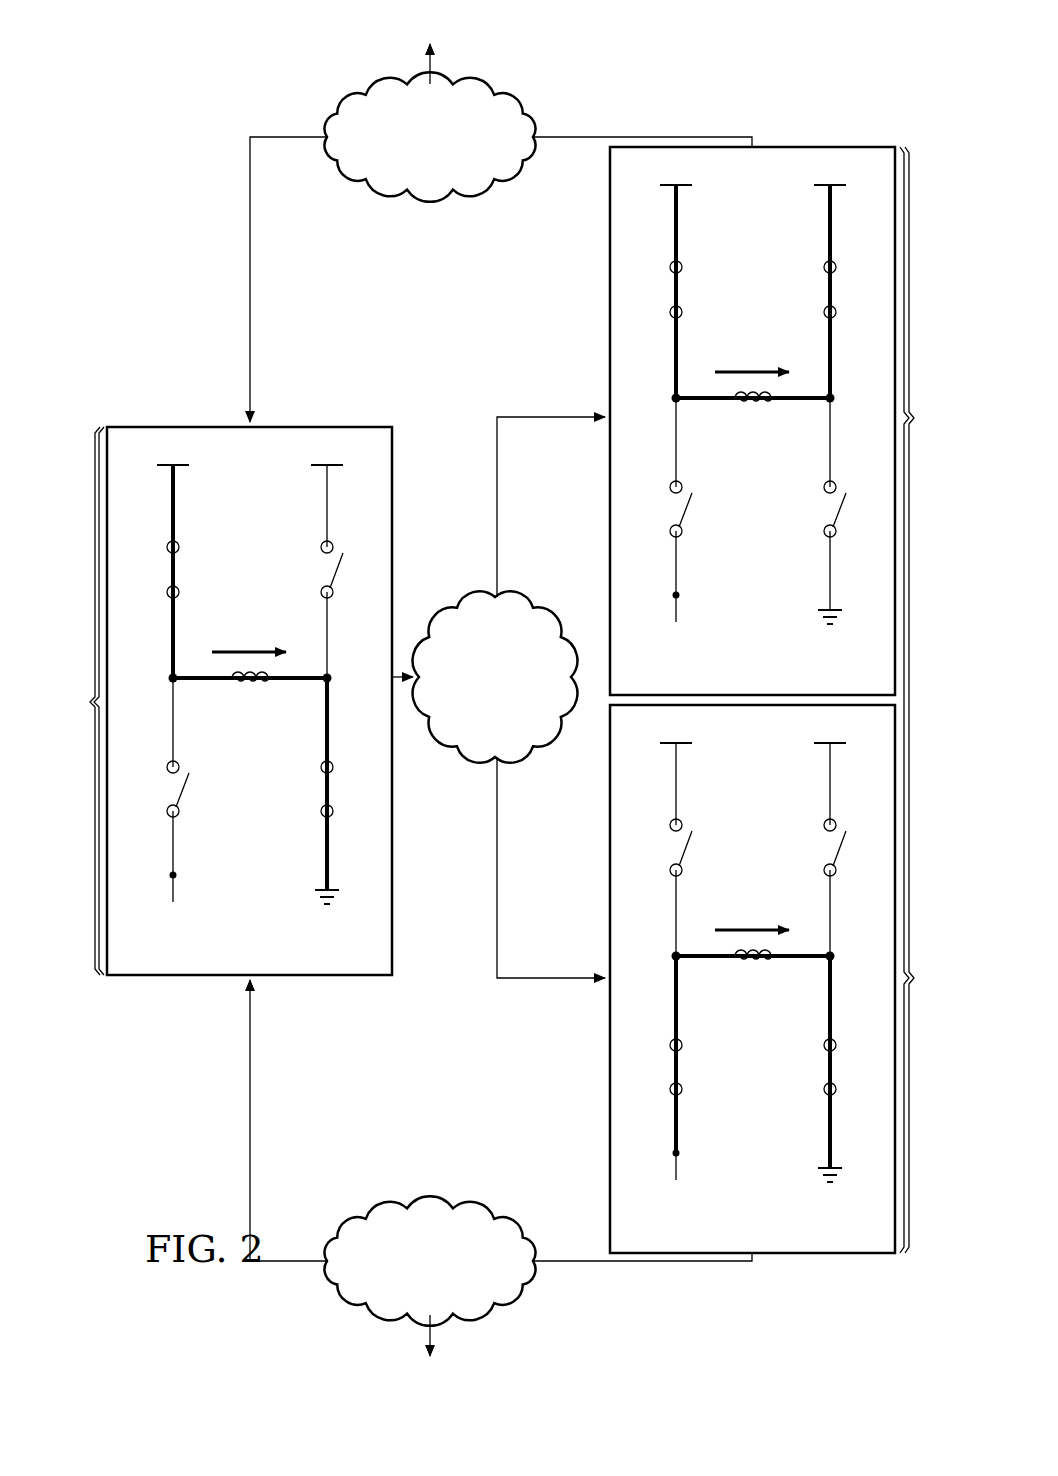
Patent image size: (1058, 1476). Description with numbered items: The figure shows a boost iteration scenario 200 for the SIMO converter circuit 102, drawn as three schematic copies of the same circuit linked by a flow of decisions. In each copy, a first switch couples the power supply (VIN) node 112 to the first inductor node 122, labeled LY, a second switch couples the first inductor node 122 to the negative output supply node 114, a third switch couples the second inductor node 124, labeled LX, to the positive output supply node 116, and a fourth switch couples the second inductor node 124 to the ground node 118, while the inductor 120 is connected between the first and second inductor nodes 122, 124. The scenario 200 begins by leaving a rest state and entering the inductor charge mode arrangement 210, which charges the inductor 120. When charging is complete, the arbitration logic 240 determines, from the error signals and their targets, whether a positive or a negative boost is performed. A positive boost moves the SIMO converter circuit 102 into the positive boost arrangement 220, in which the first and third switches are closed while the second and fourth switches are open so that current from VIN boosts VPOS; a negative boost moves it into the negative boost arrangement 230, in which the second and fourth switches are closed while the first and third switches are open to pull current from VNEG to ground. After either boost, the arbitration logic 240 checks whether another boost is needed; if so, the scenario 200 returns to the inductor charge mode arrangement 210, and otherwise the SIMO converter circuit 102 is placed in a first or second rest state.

The SIMO converter circuit 102 is at (172, 422).
The power supply (VIN) node 112 is at (171, 468).
The negative output supply node 114 is at (166, 880).
The positive output supply node 116 is at (331, 468).
The ground node 118 is at (321, 895).
The inductor 120 is at (249, 683).
The first inductor node 122 is at (169, 676).
The second inductor node 124 is at (332, 676).
The boost iteration scenario 200 is at (200, 68).
The inductor charge mode arrangement 210 is at (74, 701).
The positive boost arrangement 220 is at (929, 423).
The negative boost arrangement 230 is at (929, 976).
The arbitration logic 240 is at (386, 196).